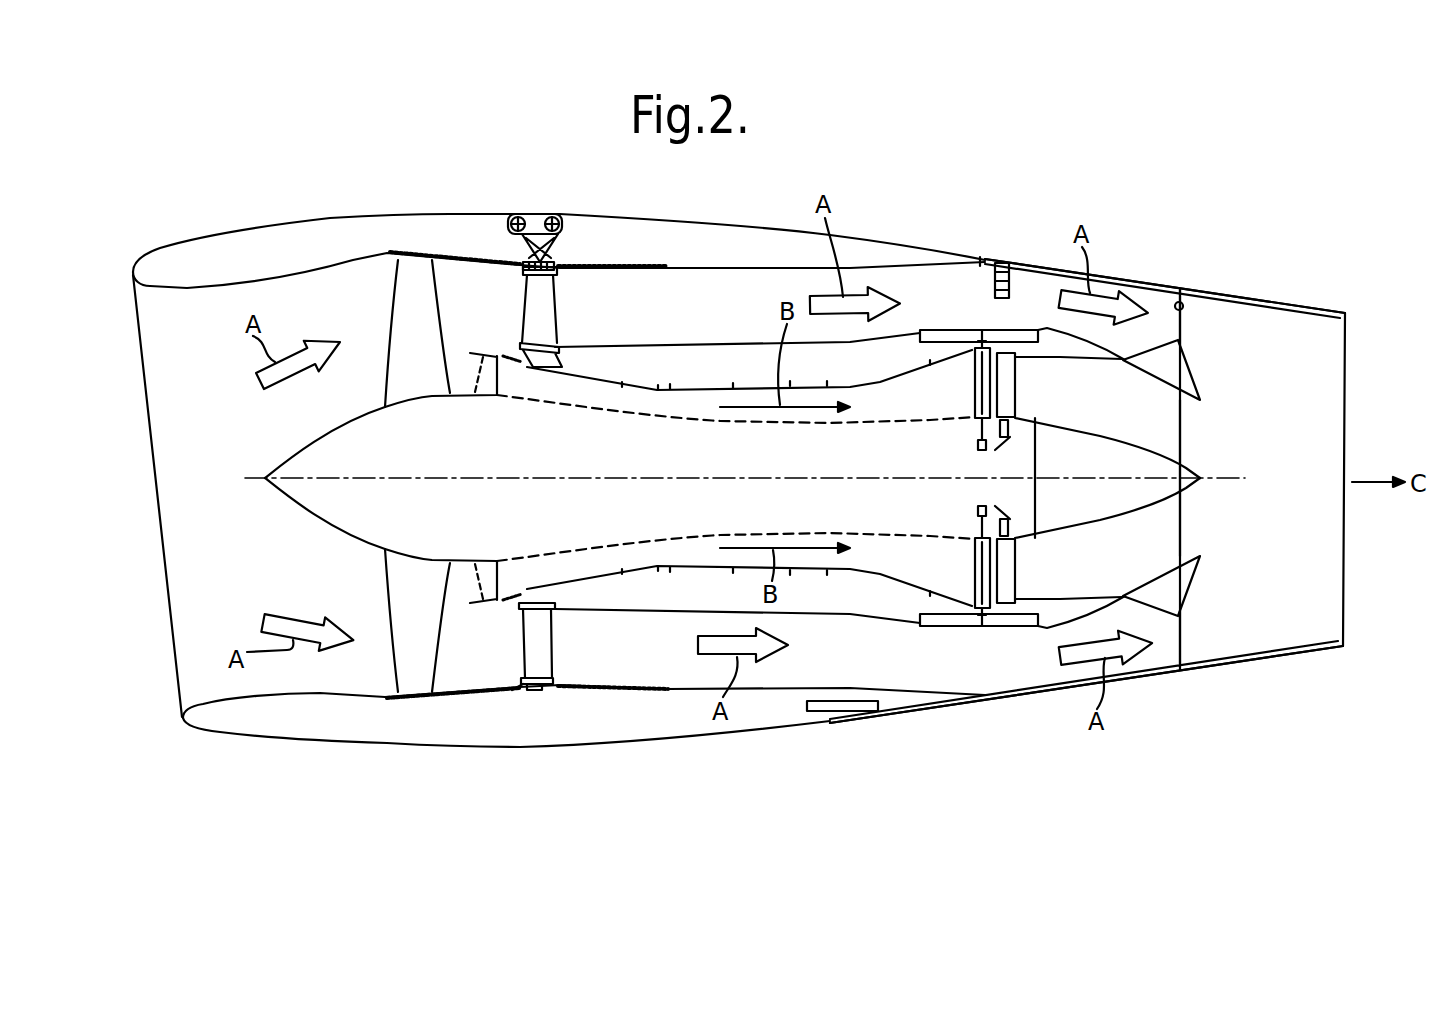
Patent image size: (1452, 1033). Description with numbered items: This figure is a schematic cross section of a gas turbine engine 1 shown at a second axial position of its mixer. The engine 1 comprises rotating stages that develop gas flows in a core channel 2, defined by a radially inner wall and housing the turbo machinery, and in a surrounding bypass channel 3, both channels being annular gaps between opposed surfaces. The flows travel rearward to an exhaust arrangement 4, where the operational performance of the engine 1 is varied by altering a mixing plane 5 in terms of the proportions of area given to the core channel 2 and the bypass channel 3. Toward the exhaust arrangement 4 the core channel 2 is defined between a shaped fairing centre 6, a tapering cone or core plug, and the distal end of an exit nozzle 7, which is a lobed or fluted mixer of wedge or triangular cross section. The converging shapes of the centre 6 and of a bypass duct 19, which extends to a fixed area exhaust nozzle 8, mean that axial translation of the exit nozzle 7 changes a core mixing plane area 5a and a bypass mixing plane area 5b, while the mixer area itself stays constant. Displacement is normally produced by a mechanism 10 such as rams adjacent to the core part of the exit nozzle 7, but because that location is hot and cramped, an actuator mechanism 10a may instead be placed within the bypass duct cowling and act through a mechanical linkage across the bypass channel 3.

The gas turbine engine 1 is at (555, 170).
The core channel 2 is at (885, 357).
The bypass channel 3 is at (638, 294).
The exhaust arrangement 4 is at (1216, 244).
The mixing plane 5 is at (1175, 662).
The core mixing plane area 5a is at (1182, 414).
The bypass mixing plane area 5b is at (1185, 303).
The shaped fairing centre 6 is at (1158, 470).
The exit nozzle 7 is at (1167, 362).
The exhaust nozzle 8 is at (1303, 653).
The mechanism 10 is at (965, 630).
The actuator mechanism 10a is at (852, 715).
The bypass duct 19 is at (1160, 283).